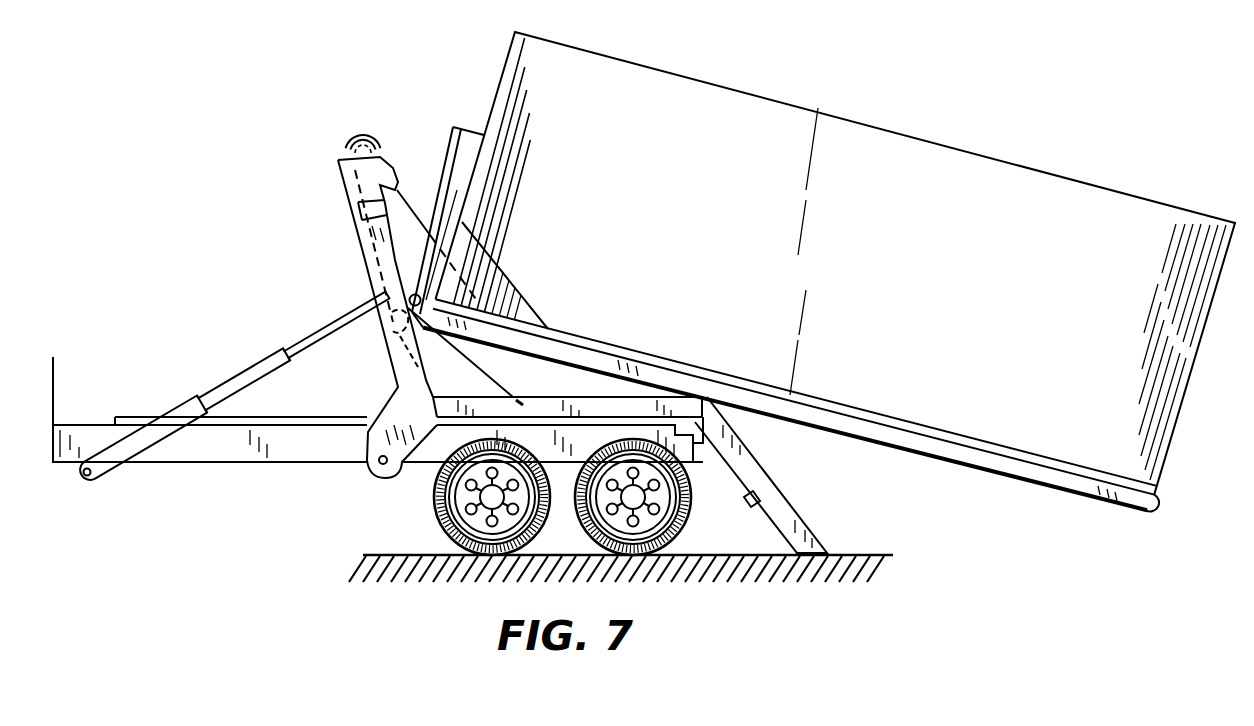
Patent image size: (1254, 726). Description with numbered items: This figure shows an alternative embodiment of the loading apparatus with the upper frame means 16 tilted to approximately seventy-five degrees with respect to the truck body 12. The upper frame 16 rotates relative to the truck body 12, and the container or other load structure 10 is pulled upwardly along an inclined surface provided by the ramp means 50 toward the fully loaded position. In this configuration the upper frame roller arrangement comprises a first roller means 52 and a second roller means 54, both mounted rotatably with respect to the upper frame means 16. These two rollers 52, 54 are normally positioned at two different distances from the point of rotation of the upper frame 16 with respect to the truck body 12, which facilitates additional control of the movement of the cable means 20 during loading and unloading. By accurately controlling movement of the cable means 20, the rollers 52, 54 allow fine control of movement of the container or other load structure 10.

The container or other load structure 10 is at (838, 276).
The truck body 12 is at (320, 465).
The upper frame means 16 is at (340, 190).
The cable means 20 is at (428, 196).
The ramp means 50 is at (787, 507).
The first roller means 52 is at (352, 143).
The second roller means 54 is at (388, 328).